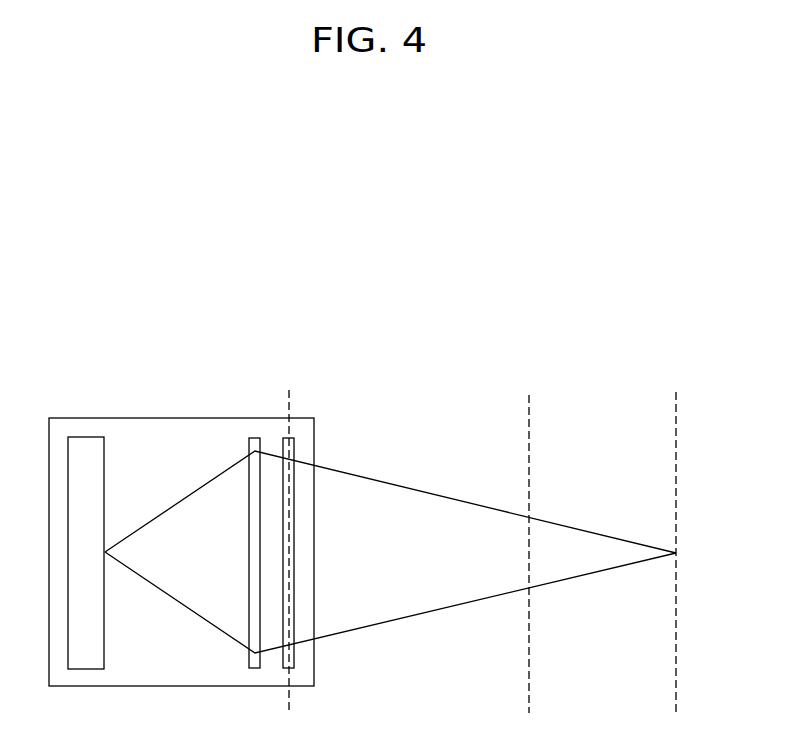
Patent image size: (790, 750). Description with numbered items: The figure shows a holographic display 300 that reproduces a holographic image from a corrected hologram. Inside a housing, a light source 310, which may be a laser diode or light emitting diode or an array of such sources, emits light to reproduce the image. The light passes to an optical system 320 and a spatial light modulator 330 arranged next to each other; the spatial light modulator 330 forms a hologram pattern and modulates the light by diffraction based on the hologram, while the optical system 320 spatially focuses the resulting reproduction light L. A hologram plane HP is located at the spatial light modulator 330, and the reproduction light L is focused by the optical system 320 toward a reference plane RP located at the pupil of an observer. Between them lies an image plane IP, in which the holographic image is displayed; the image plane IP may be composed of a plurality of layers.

The holographic display 300 is at (684, 255).
The light source 310 is at (88, 437).
The optical system 320 is at (255, 438).
The spatial light modulator 330 is at (296, 438).
The hologram plane HP is at (292, 398).
The image plane IP is at (529, 410).
The reference plane RP is at (677, 410).
The reproduction light L is at (422, 485).